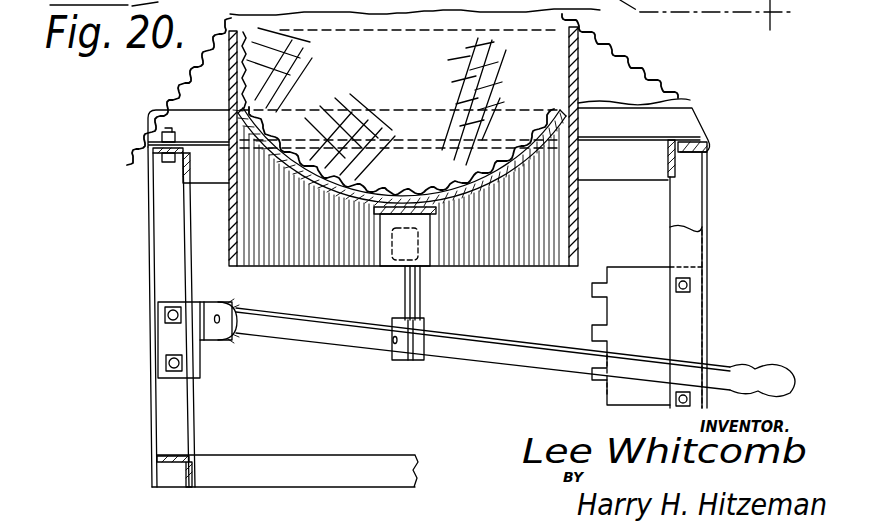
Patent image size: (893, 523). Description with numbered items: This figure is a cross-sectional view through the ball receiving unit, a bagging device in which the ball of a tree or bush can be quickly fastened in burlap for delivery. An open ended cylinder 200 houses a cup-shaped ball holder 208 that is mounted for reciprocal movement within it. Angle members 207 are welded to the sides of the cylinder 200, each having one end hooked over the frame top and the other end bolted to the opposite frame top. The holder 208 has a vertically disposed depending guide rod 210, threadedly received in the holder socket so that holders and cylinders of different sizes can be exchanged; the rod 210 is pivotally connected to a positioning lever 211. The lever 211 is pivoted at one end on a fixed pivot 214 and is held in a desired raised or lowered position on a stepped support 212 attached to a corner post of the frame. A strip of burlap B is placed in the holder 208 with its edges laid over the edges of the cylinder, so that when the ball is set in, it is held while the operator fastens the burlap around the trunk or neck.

The strip of burlap B is at (660, 82).
The open ended cylinder 200 is at (579, 221).
The angle member 207 is at (687, 128).
The cup-shaped ball holder 208 is at (480, 194).
The guide rod 210 is at (420, 301).
The positioning lever 211 is at (475, 360).
The stepped support 212 is at (592, 292).
The fixed pivot 214 is at (215, 318).